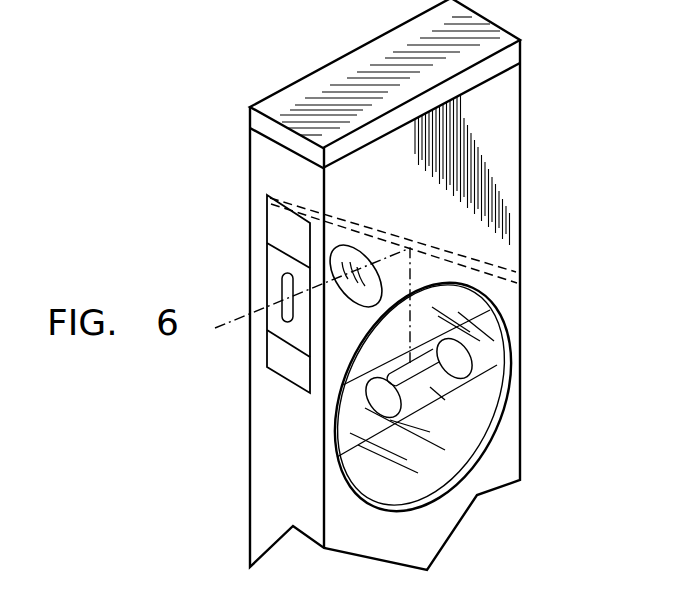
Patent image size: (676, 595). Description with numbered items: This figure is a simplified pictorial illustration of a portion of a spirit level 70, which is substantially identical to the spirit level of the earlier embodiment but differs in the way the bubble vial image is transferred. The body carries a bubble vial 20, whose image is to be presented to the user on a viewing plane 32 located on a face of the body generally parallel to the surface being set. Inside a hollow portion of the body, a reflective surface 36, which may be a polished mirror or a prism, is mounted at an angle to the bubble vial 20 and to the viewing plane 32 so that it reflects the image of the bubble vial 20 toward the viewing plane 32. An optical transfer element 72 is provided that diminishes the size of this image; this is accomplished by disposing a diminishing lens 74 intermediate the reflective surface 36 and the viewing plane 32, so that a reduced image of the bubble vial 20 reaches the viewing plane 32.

The spirit level 70 is at (203, 163).
The viewing plane 32 is at (280, 232).
The diminishing lens 74 is at (352, 255).
The optical transfer element 72 is at (395, 236).
The reflective surface 36 is at (453, 255).
The bubble vial 20 is at (430, 390).